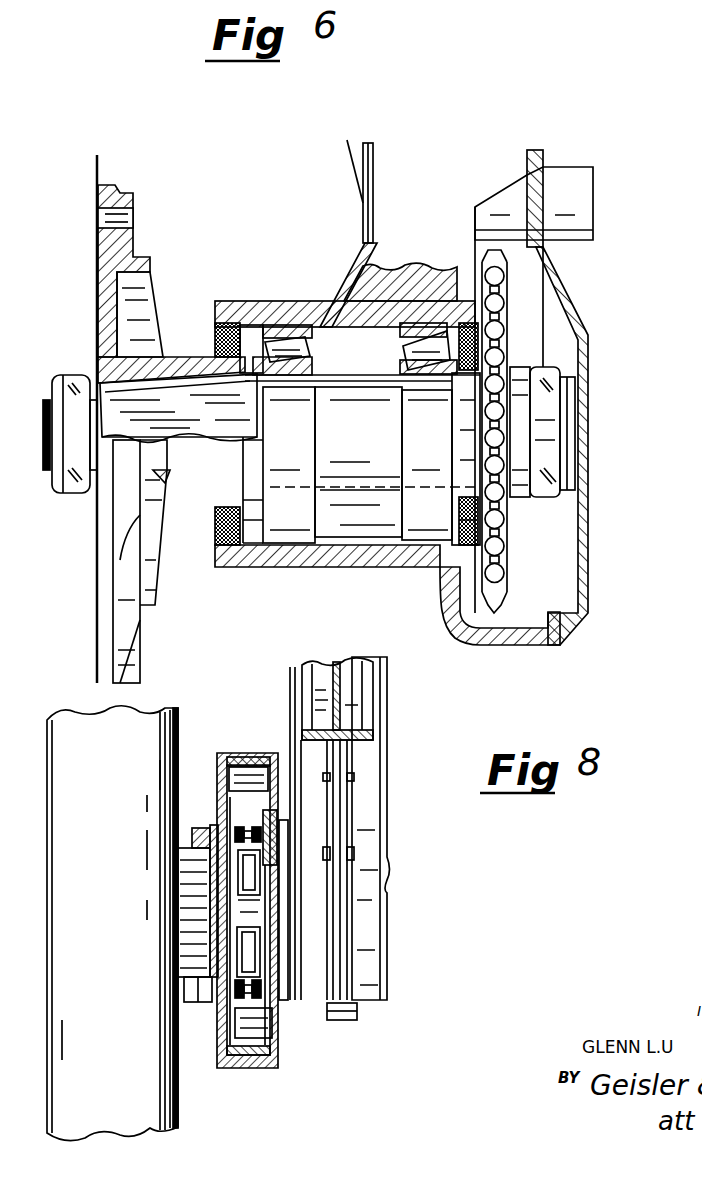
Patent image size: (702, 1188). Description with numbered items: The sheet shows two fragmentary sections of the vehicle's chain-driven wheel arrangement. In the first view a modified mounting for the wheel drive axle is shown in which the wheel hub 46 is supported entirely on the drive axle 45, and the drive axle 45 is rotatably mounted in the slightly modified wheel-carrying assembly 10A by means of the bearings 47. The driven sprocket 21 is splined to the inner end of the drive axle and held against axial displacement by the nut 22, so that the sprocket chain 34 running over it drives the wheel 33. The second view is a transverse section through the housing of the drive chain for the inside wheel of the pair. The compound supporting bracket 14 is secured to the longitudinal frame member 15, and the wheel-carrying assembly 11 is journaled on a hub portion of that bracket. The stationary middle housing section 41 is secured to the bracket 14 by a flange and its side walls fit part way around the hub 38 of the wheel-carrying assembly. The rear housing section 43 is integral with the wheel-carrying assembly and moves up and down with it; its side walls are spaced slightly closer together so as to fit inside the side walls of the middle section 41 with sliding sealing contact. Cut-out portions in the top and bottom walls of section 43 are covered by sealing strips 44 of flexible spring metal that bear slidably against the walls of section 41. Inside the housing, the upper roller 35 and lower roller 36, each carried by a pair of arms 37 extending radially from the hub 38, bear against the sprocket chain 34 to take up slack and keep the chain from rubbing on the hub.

In FIG. 6, the wheel-carrying assembly 10A is at (237, 305).
In FIG. 8, the wheel-carrying assembly 11 is at (198, 1001).
In FIG. 8, the compound supporting bracket 14 is at (378, 837).
In FIG. 8, the longitudinal frame member 15 is at (350, 667).
In FIG. 6, the driven sprocket 21 is at (493, 315).
In FIG. 6, the nut 22 is at (563, 407).
In FIG. 8, the wheel 33 is at (140, 730).
In FIG. 8, the sprocket chain 34 is at (250, 827).
In FIG. 8, the upper roller 35 is at (260, 853).
In FIG. 8, the lower roller 36 is at (338, 1012).
In FIG. 8, the arms 37 is at (262, 903).
In FIG. 8, the hub 38 is at (190, 947).
In FIG. 8, the middle housing section 41 is at (222, 802).
In FIG. 8, the rear housing section 43 is at (222, 760).
In FIG. 8, the sealing strips 44 is at (237, 755).
In FIG. 6, the drive axle 45 is at (112, 360).
In FIG. 6, the wheel hub 46 is at (102, 263).
In FIG. 6, the bearings 47 is at (392, 350).